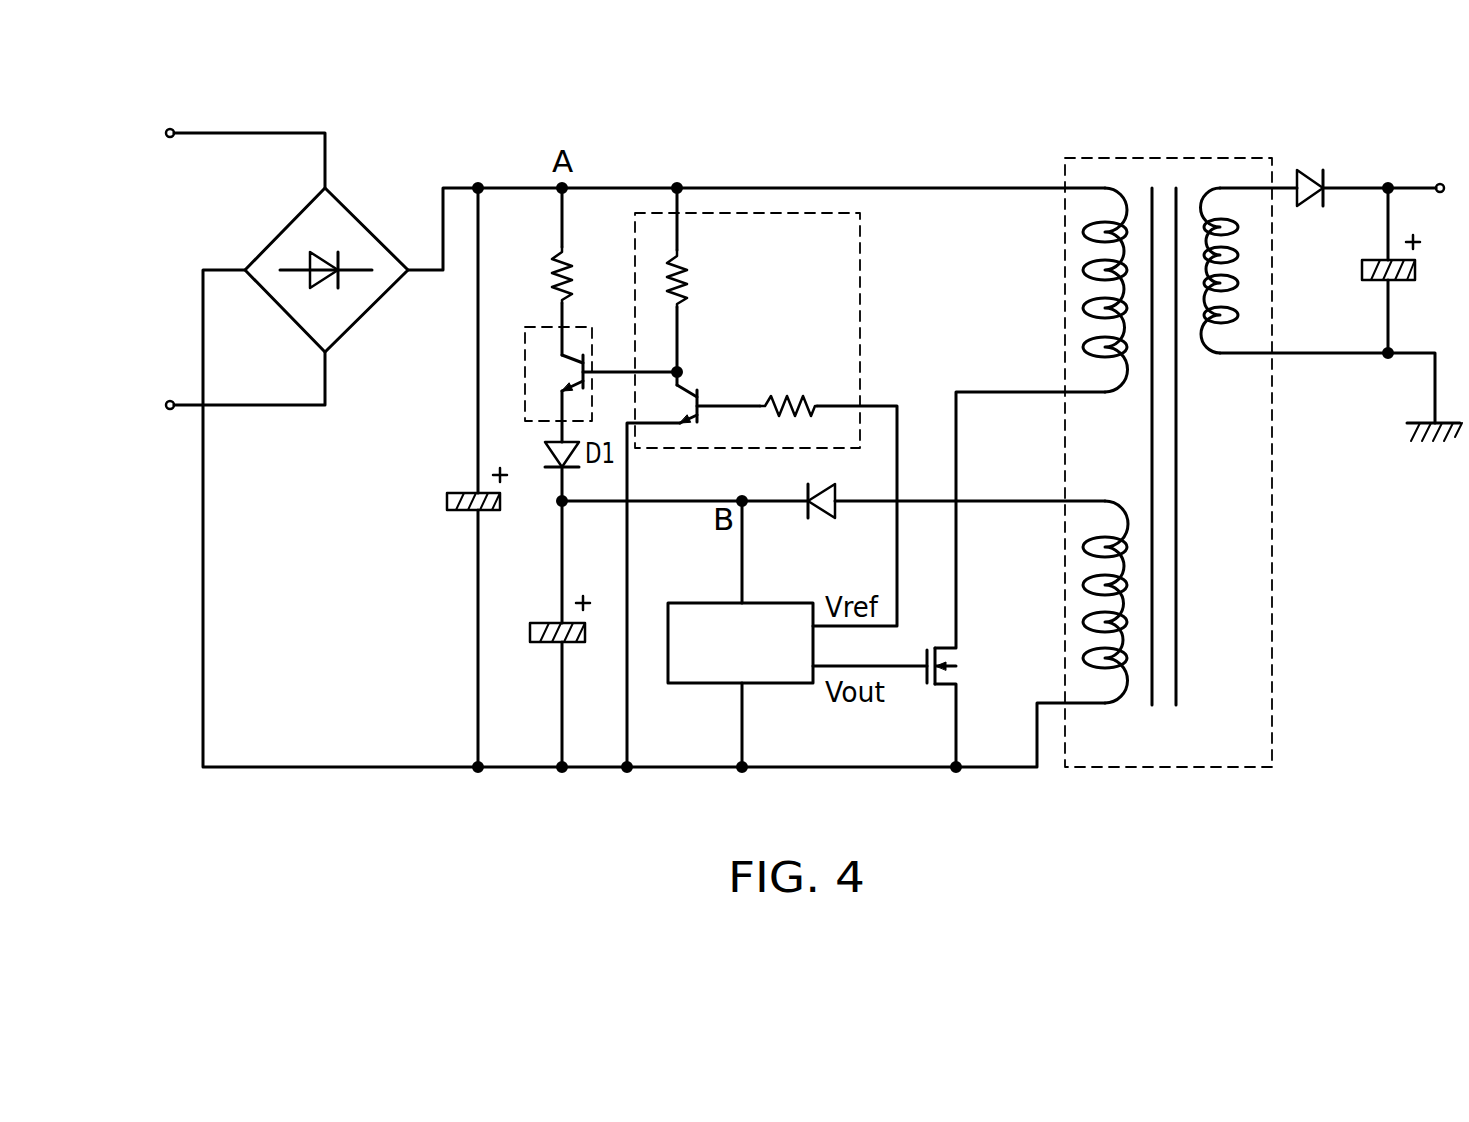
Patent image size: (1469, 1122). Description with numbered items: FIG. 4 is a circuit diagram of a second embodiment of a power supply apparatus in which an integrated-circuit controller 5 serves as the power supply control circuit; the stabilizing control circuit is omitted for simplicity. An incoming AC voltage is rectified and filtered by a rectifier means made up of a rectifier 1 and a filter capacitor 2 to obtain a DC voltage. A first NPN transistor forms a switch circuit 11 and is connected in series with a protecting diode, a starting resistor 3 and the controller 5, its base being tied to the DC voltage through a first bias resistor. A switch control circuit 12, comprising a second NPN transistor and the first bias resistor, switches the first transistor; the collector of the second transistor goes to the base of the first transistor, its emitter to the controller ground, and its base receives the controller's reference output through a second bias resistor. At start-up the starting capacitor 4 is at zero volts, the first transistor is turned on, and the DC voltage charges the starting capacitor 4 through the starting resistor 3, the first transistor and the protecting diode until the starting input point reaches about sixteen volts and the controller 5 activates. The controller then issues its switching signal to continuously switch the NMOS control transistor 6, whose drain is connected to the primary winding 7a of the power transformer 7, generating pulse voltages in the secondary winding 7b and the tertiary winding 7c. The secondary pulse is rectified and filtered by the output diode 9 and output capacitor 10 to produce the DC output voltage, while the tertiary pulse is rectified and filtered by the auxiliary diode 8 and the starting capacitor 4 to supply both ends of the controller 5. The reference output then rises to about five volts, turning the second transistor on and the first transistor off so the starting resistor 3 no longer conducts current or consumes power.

The rectifier 1 is at (355, 213).
The filter capacitor 2 is at (455, 512).
The starting resistor 3 is at (567, 268).
The starting capacitor 4 is at (540, 645).
The 3842 controller 5 is at (718, 684).
The NMOS transistor 6 is at (943, 688).
The power transformer 7 is at (1168, 426).
The primary winding 7a is at (1080, 393).
The secondary winding 7b is at (1237, 355).
The tertiary winding 7c is at (1080, 705).
The auxiliary diode 8 is at (822, 520).
The output diode 9 is at (1310, 170).
The output capacitor 10 is at (1405, 283).
The switch circuit 11 is at (545, 326).
The switch control circuit 12 is at (860, 243).